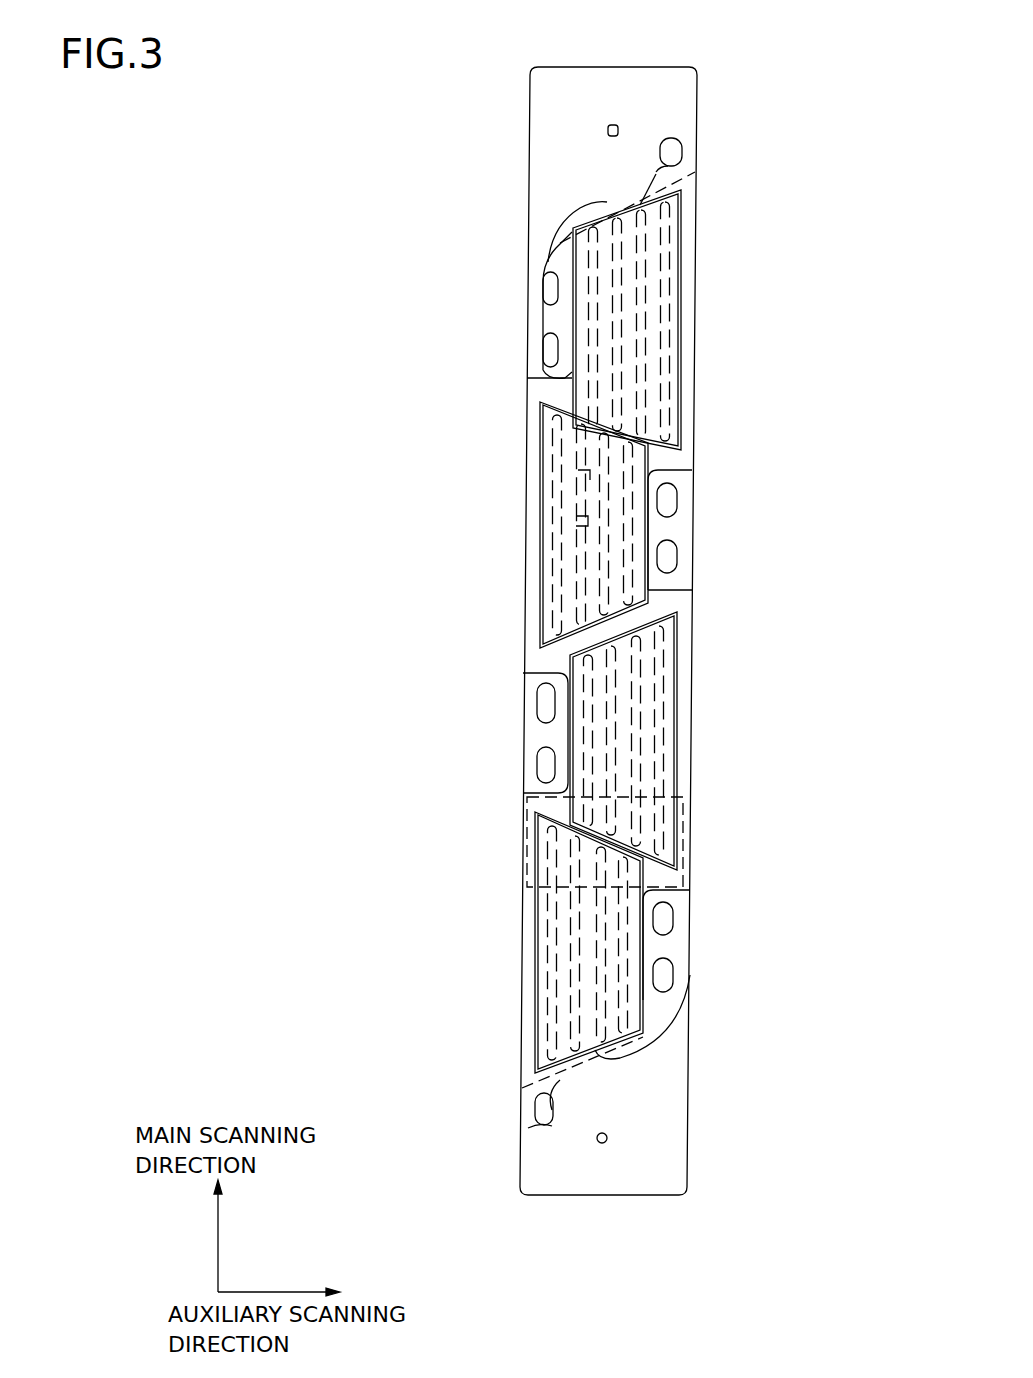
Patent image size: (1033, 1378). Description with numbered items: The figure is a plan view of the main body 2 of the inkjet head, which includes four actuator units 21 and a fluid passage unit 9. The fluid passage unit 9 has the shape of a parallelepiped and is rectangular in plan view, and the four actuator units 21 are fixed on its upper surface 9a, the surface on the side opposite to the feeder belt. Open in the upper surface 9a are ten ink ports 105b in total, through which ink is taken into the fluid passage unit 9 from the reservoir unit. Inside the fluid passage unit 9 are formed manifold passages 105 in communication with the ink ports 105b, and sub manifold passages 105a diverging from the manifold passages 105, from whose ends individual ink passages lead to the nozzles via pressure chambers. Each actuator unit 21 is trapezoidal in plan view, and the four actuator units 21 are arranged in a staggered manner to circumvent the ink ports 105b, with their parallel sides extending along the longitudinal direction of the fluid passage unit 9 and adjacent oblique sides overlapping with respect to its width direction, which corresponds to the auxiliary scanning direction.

The main body 2 is at (712, 98).
The fluid passage unit 9 is at (694, 684).
The upper surface 9a is at (548, 152).
The actuator unit 21 is at (678, 297).
The manifold passage 105 is at (535, 258).
The sub manifold passage 105a is at (562, 519).
The ink port 105b is at (672, 158).